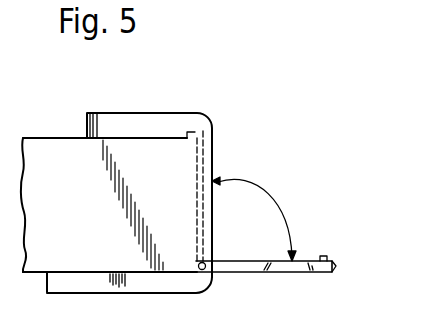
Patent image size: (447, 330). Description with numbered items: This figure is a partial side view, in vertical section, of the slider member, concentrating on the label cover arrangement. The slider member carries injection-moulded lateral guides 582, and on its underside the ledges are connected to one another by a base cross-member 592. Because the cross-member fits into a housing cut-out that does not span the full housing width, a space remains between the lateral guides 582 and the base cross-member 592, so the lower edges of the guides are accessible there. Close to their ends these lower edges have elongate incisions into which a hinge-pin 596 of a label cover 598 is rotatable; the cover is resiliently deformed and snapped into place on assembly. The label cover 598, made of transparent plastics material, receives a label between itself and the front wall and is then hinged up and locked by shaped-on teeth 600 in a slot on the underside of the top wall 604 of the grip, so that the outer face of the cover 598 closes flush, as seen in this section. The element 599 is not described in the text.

The lateral guide 582 is at (68, 163).
The top wall 604 is at (150, 132).
The pin 599 is at (196, 140).
The label cover 598 is at (256, 274).
The shaped-on teeth 600 is at (377, 256).
The hinge-pin 596 is at (200, 296).
The base cross-member 592 is at (103, 281).